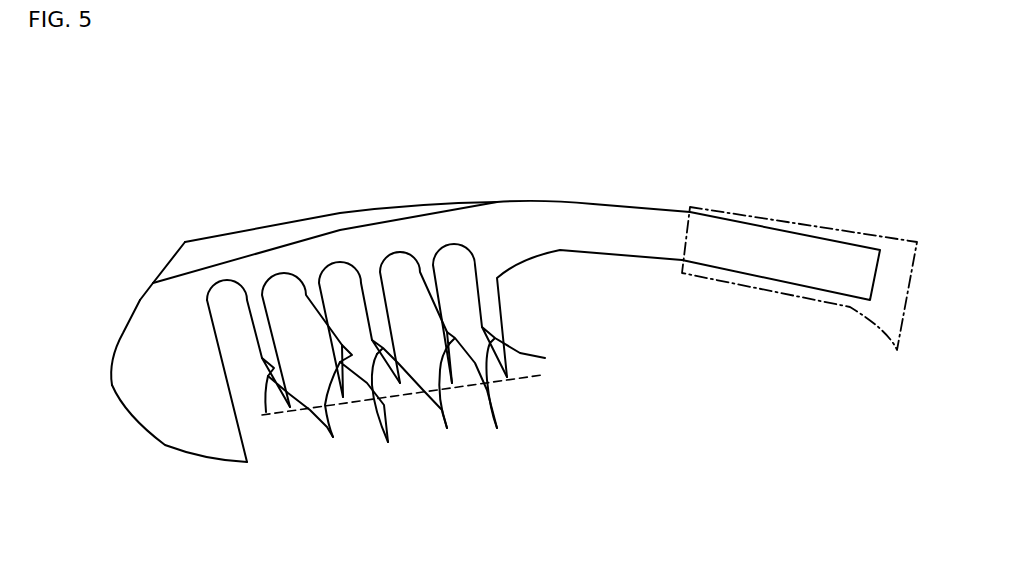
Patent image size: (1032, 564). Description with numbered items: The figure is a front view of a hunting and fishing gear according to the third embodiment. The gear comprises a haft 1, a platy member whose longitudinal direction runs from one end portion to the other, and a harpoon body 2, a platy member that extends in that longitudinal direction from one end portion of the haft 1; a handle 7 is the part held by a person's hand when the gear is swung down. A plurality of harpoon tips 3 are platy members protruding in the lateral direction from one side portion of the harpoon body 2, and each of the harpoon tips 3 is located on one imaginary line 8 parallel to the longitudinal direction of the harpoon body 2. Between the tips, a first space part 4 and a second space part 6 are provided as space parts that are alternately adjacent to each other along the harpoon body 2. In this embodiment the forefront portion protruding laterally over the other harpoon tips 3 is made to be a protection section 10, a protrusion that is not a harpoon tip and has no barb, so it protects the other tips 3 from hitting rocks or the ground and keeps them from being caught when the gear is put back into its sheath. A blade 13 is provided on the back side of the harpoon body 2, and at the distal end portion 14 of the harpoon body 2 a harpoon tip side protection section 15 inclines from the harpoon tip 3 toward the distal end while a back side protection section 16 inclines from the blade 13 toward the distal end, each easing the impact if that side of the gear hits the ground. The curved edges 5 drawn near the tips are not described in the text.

The haft 1 is at (653, 223).
The harpoon body 2 is at (498, 223).
The harpoon tips 3 is at (545, 358).
The first space part 4 is at (233, 295).
The curved edge 5 is at (266, 412).
The second space part 6 is at (287, 283).
The handle 7 is at (850, 307).
The imaginary line 8 is at (535, 375).
The protection section 10 is at (230, 445).
The blade 13 is at (350, 225).
The distal end portion 14 is at (138, 380).
The harpoon tip side protection section 15 is at (160, 417).
The back side protection section 16 is at (150, 313).